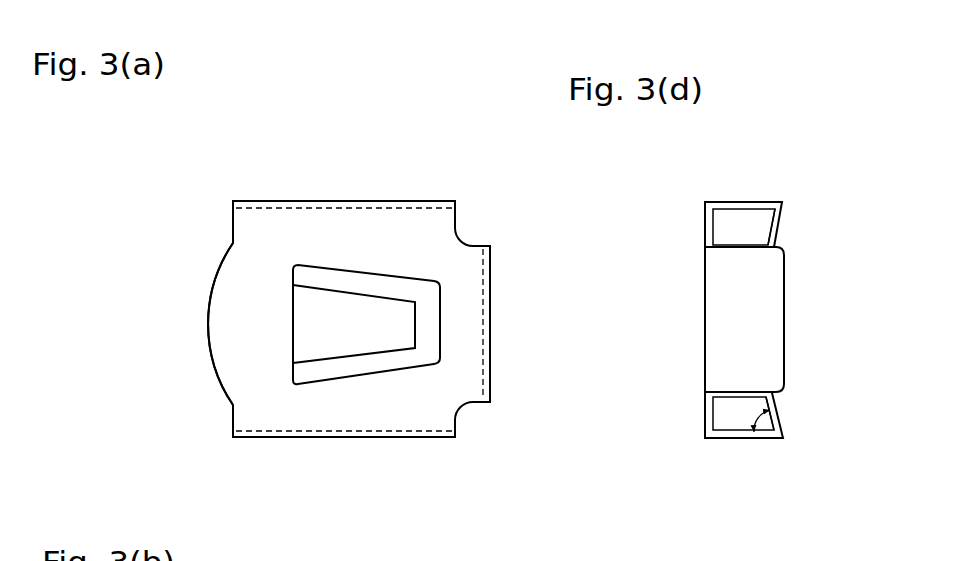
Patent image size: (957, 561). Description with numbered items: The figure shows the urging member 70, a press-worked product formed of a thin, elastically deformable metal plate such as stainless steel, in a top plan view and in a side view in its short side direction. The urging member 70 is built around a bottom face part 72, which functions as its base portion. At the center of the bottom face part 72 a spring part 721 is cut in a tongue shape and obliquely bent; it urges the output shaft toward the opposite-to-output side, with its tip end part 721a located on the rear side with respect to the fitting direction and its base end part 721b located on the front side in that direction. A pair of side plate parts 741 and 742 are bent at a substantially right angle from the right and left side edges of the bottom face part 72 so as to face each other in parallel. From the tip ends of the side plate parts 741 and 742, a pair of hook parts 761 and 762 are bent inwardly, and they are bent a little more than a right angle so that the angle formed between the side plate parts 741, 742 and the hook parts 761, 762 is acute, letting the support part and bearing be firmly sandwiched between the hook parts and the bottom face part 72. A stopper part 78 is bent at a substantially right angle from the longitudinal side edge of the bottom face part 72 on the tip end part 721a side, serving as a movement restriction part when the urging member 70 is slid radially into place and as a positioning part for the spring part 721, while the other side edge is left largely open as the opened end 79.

In FIG. 3A, the urging member 70 is at (201, 212).
In FIG. 3A, the bottom face part 72 is at (307, 225).
In FIG. 3D, the bottom face part 72 is at (705, 227).
In FIG. 3A, the stopper part 78 is at (487, 320).
In FIG. 3D, the stopper part 78 is at (762, 303).
In FIG. 3A, the opened end 79 is at (203, 297).
In FIG. 3A, the spring part 721 is at (370, 336).
In FIG. 3A, the tip end part 721a is at (417, 330).
In FIG. 3A, the base end part 721b is at (293, 335).
In FIG. 3A, the side plate part 741 is at (408, 438).
In FIG. 3D, the side plate part 741 is at (743, 440).
In FIG. 3A, the side plate part 742 is at (400, 202).
In FIG. 3D, the side plate part 742 is at (742, 202).
In FIG. 3D, the hook part 761 is at (775, 410).
In FIG. 3D, the hook part 762 is at (777, 230).